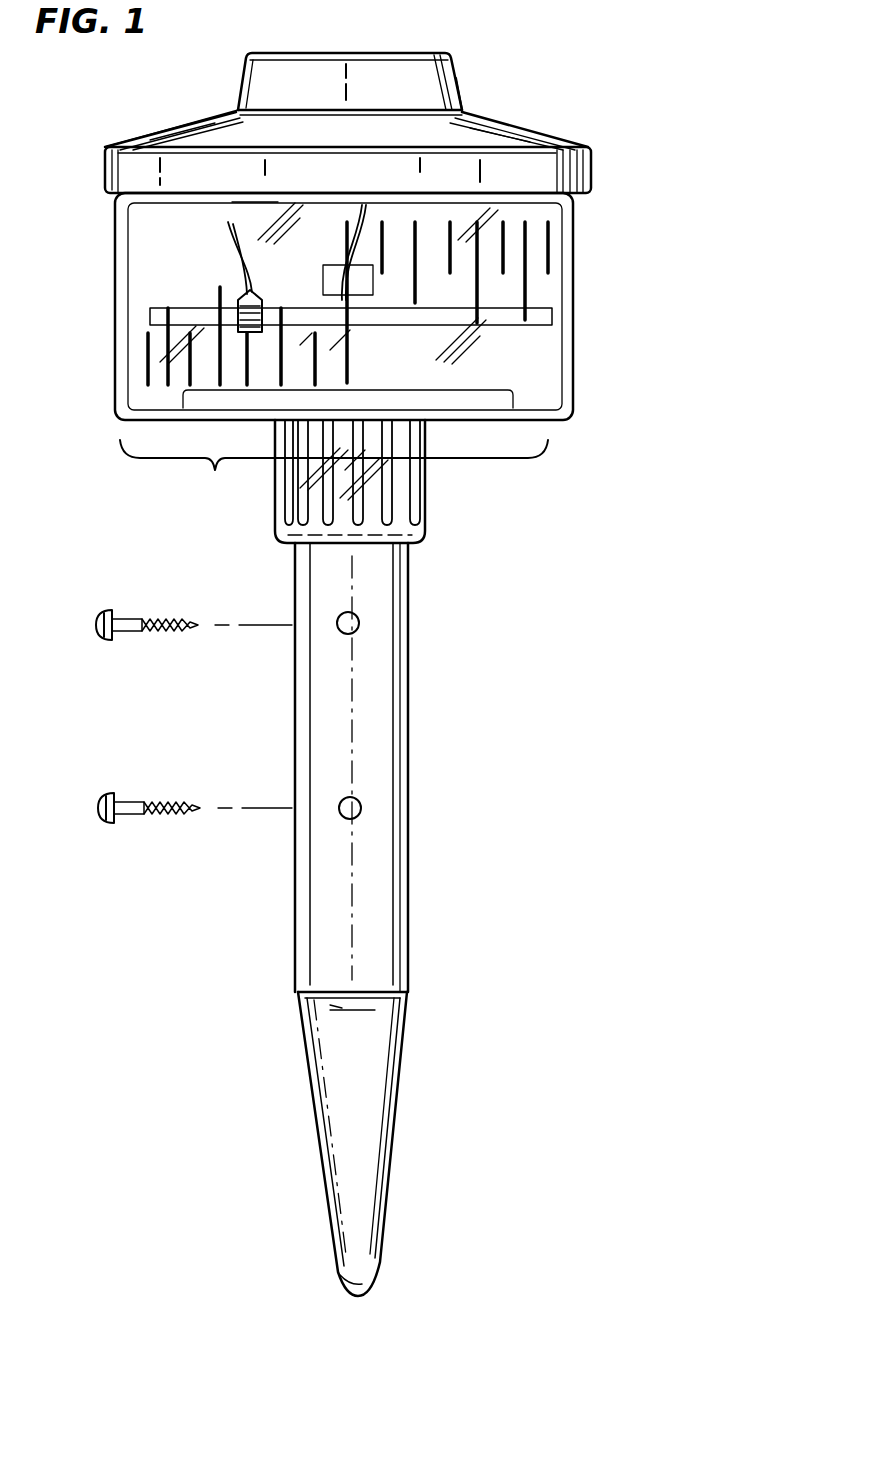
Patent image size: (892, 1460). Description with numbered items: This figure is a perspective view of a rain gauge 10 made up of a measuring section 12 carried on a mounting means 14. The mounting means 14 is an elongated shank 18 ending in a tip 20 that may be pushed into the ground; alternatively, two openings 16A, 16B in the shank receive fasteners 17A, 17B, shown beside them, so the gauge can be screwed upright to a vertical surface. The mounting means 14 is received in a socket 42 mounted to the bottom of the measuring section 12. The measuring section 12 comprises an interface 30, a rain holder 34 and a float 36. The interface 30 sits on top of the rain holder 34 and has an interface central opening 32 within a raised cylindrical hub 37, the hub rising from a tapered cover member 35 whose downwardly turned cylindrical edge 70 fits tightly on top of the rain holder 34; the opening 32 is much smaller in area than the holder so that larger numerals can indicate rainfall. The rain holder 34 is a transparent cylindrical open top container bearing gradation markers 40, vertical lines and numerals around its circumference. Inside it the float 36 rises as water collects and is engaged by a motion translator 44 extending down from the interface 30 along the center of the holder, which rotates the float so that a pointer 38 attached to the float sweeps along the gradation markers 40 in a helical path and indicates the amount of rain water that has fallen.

The rain gauge 10 is at (172, 83).
The measuring section 12 is at (530, 80).
The mounting means 14 is at (268, 745).
The opening 16A is at (360, 622).
The opening 16B is at (362, 809).
The fastener 17A is at (128, 616).
The fastener 17B is at (136, 802).
The shank 18 is at (432, 1000).
The tip 20 is at (348, 1294).
The interface 30 is at (152, 120).
The interface central opening 32 is at (358, 53).
The rain holder 34 is at (98, 272).
The tapered cover member 35 is at (516, 125).
The float 36 is at (244, 297).
The cylindrical hub 37 is at (456, 80).
The pointer 38 is at (228, 222).
The gradation markers 40 is at (334, 474).
The socket 42 is at (416, 487).
The motion translator 44 is at (372, 216).
The downwardly turned cylindrical edge 70 is at (596, 168).